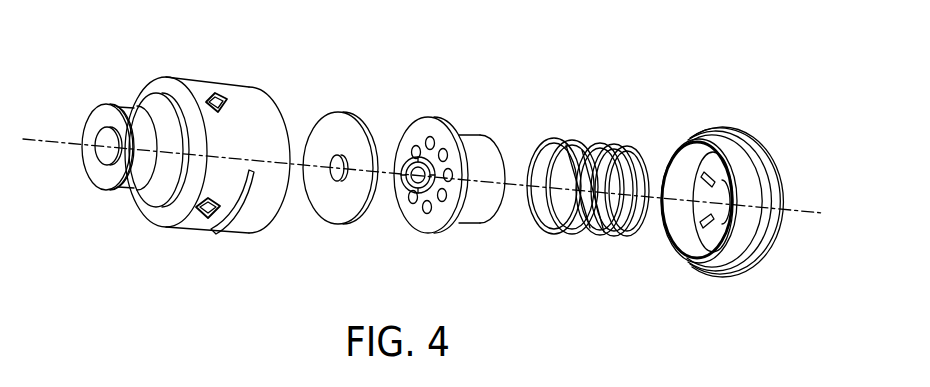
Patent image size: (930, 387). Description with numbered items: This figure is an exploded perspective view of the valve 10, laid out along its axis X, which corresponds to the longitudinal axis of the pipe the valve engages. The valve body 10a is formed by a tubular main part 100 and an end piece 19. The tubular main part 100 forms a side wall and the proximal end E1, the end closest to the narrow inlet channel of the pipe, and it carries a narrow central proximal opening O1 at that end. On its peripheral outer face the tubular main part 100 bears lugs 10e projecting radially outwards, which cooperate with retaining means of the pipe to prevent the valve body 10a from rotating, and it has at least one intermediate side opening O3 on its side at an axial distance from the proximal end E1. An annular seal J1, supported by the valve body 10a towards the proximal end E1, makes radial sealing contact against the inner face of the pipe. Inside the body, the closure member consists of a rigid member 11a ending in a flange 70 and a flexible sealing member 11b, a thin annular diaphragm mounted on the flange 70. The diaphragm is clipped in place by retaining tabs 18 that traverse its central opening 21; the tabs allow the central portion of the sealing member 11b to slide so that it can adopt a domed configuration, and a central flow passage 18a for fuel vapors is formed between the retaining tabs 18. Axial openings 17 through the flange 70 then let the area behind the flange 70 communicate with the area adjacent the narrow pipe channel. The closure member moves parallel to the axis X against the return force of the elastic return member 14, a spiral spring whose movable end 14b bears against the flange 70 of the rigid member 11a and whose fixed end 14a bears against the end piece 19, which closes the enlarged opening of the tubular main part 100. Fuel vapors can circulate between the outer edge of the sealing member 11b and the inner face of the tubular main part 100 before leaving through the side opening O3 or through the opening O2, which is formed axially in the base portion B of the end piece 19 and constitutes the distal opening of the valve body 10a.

The valve 10 is at (140, 270).
The tubular main part 100 is at (177, 72).
The valve body 10a is at (242, 90).
The lugs 10e is at (216, 93).
The axis X is at (54, 139).
The central proximal opening O1 is at (104, 143).
The annular seal J1 is at (126, 103).
The proximal end E1 is at (100, 188).
The intermediate side opening O3 is at (237, 207).
The sealing member 11b is at (370, 127).
The central opening 21 is at (334, 178).
The rigid member 11a is at (477, 131).
The flange 70 is at (405, 212).
The openings 17 is at (438, 201).
The retaining tabs 18 is at (412, 157).
The central flow passage 18a is at (427, 163).
The elastic return member 14 is at (587, 233).
The movable end 14b is at (537, 222).
The fixed end 14a is at (632, 237).
The end piece 19 is at (739, 273).
The opening O2 is at (703, 258).
The base portion B is at (730, 130).